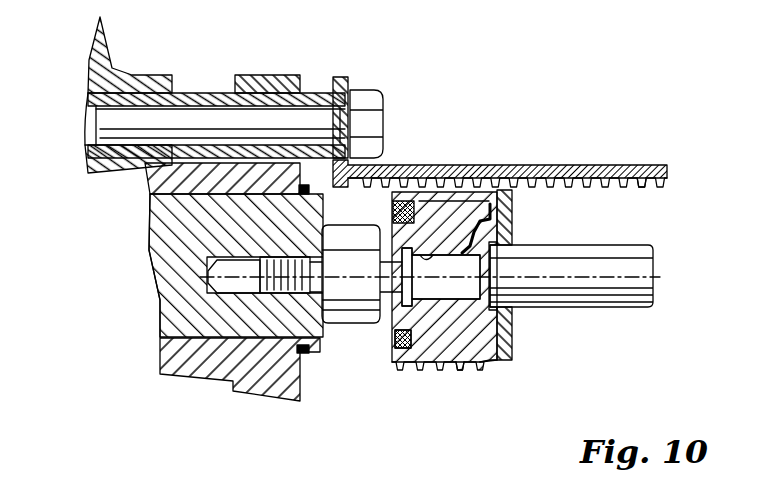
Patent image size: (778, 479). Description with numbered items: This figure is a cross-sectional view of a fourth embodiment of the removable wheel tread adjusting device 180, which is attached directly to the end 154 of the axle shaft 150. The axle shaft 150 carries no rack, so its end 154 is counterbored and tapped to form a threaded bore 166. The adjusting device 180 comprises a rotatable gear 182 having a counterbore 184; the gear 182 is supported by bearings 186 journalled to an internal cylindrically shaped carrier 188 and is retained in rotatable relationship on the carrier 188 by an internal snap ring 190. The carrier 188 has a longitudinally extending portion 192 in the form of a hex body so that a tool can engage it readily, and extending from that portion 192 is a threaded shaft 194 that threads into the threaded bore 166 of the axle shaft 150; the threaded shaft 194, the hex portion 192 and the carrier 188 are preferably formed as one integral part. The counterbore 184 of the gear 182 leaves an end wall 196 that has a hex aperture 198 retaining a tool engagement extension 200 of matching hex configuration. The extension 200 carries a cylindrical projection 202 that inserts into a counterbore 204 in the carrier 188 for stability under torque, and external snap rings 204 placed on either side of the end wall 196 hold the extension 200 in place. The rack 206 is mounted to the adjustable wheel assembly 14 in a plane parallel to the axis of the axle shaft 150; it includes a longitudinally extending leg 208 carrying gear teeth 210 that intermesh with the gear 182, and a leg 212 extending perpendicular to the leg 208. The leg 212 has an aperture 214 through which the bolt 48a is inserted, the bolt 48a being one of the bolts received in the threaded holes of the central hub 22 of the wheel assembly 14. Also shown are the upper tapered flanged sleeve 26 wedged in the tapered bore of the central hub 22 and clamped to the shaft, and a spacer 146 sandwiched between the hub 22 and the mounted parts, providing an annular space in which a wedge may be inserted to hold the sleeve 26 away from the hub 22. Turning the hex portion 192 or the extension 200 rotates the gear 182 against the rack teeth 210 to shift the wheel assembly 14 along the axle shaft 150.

The adjustable wheel assembly 14 is at (148, 397).
The central hub 22 is at (145, 75).
The upper tapered flanged sleeve 26 is at (262, 68).
The bolt 48a is at (384, 118).
The spacer 146 is at (200, 93).
The axle shaft 150 is at (168, 273).
The end of axle shaft 154 is at (323, 335).
The threaded bore 166 is at (260, 300).
The removable wheel tread adjusting device 180 is at (572, 369).
The rotatable gear 182 is at (477, 378).
The counterbore 184 is at (447, 368).
The bearings 186 is at (513, 213).
The carrier 188 is at (488, 359).
The internal snap ring 190 is at (393, 337).
The longitudinally extending portion 192 is at (370, 227).
The threaded shaft 194 is at (275, 258).
The end wall 196 is at (512, 320).
The hex aperture 198 is at (518, 258).
The tool engagement extension 200 is at (653, 263).
The cylindrical projection 202 is at (455, 263).
The counterbore / external snap rings 204 is at (433, 257).
The rack 206 is at (649, 158).
The longitudinally extending leg 208 is at (590, 166).
The gear teeth 210 is at (647, 187).
The leg 212 is at (343, 77).
The aperture 214 is at (340, 117).